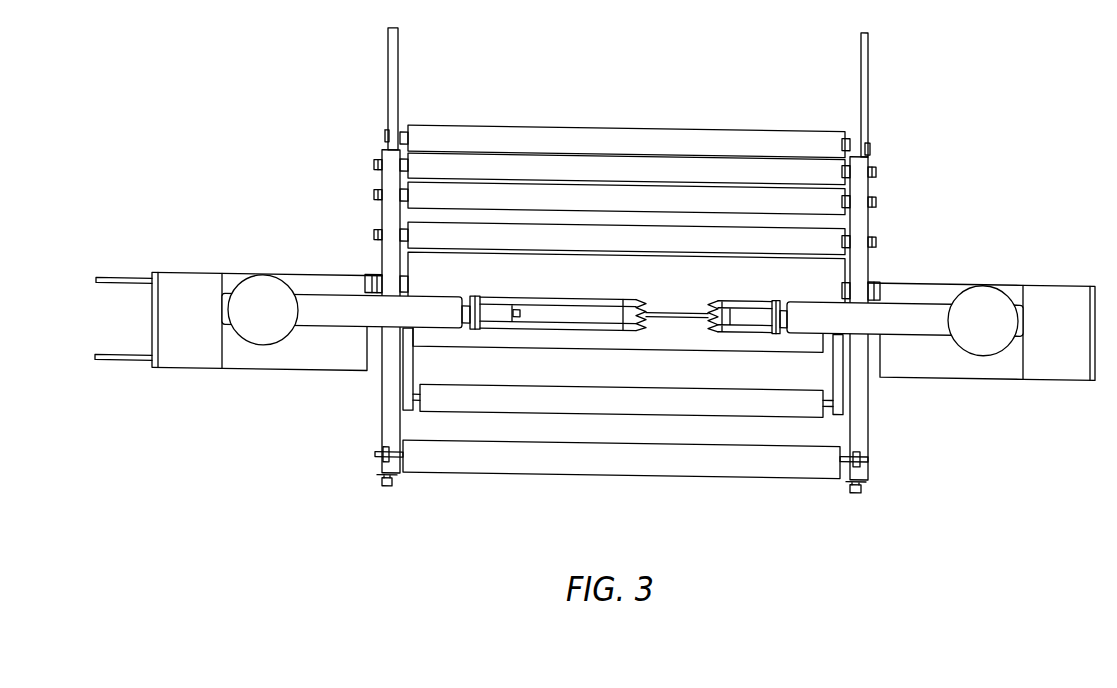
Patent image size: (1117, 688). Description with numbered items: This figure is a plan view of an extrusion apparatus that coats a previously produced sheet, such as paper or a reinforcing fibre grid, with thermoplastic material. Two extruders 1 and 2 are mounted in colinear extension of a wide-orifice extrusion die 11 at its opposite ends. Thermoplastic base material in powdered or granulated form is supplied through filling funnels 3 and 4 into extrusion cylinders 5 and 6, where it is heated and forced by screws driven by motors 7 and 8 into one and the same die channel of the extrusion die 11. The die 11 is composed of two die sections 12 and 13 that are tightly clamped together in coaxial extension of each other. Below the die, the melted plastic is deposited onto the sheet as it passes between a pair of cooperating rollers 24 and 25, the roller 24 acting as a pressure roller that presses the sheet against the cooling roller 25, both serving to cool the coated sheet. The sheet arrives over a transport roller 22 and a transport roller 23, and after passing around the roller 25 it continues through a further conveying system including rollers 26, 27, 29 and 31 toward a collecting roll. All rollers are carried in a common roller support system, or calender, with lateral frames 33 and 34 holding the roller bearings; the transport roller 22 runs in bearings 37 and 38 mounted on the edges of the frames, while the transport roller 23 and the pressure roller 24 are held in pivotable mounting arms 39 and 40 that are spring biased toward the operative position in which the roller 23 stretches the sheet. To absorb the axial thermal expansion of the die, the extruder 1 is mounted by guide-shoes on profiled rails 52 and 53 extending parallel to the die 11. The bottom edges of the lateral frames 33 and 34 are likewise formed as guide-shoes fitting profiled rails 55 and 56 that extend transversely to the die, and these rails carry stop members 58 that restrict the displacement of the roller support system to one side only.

The extruder 1 is at (340, 357).
The extruder 2 is at (921, 366).
The filling funnel 3 is at (249, 331).
The filling funnel 4 is at (992, 336).
The extrusion cylinder 5 is at (332, 305).
The extrusion cylinder 6 is at (920, 308).
The motor 7 is at (195, 280).
The motor 8 is at (1066, 296).
The wide-orifice extrusion die 11 is at (628, 300).
The die section 12 is at (574, 310).
The die section 13 is at (716, 300).
The transport roller 22 is at (772, 470).
The transport roller 23 is at (772, 407).
The cooling roller 24 is at (772, 343).
The cooling roller 25 is at (835, 273).
The roller 26 is at (843, 238).
The roller 27 is at (843, 165).
The roller 29 is at (843, 200).
The roller 31 is at (843, 132).
The lateral frame 33 is at (381, 432).
The lateral frame 34 is at (860, 433).
The bearing 37 is at (380, 458).
The bearing 38 is at (860, 463).
The pivotable mounting arm 39 is at (408, 370).
The pivotable mounting arm 40 is at (835, 378).
The profiled rail 52 is at (136, 280).
The profiled rail 53 is at (138, 357).
The profiled rail 55 is at (399, 84).
The profiled rail 56 is at (861, 91).
The stop member 58 is at (862, 490).